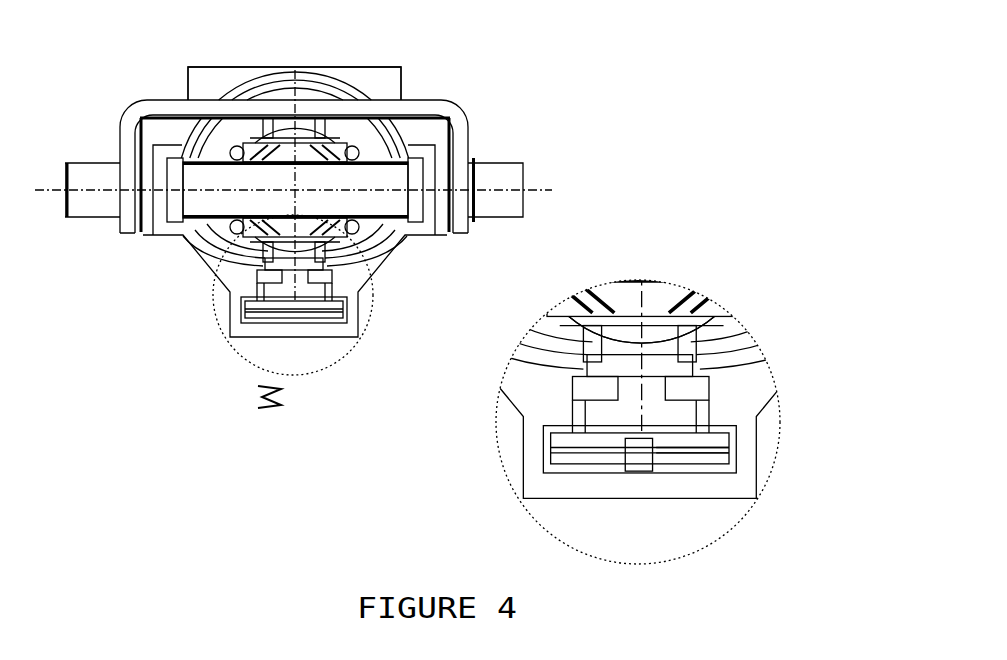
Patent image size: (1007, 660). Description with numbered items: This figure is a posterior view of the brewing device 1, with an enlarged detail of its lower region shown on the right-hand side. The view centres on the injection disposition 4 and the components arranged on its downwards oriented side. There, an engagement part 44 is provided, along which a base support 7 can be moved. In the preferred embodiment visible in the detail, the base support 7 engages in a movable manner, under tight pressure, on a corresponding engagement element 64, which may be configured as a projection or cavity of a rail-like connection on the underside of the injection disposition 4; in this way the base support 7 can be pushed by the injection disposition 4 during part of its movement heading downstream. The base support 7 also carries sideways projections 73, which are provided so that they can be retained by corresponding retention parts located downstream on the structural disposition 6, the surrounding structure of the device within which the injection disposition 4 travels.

The brewing device 1 is at (229, 61).
The injection disposition 4 is at (353, 262).
The engagement part 44 is at (663, 343).
The structural disposition 6 is at (233, 317).
The engagement element 64 is at (638, 456).
The base support 7 is at (313, 306).
The sideways projections 73 is at (712, 453).